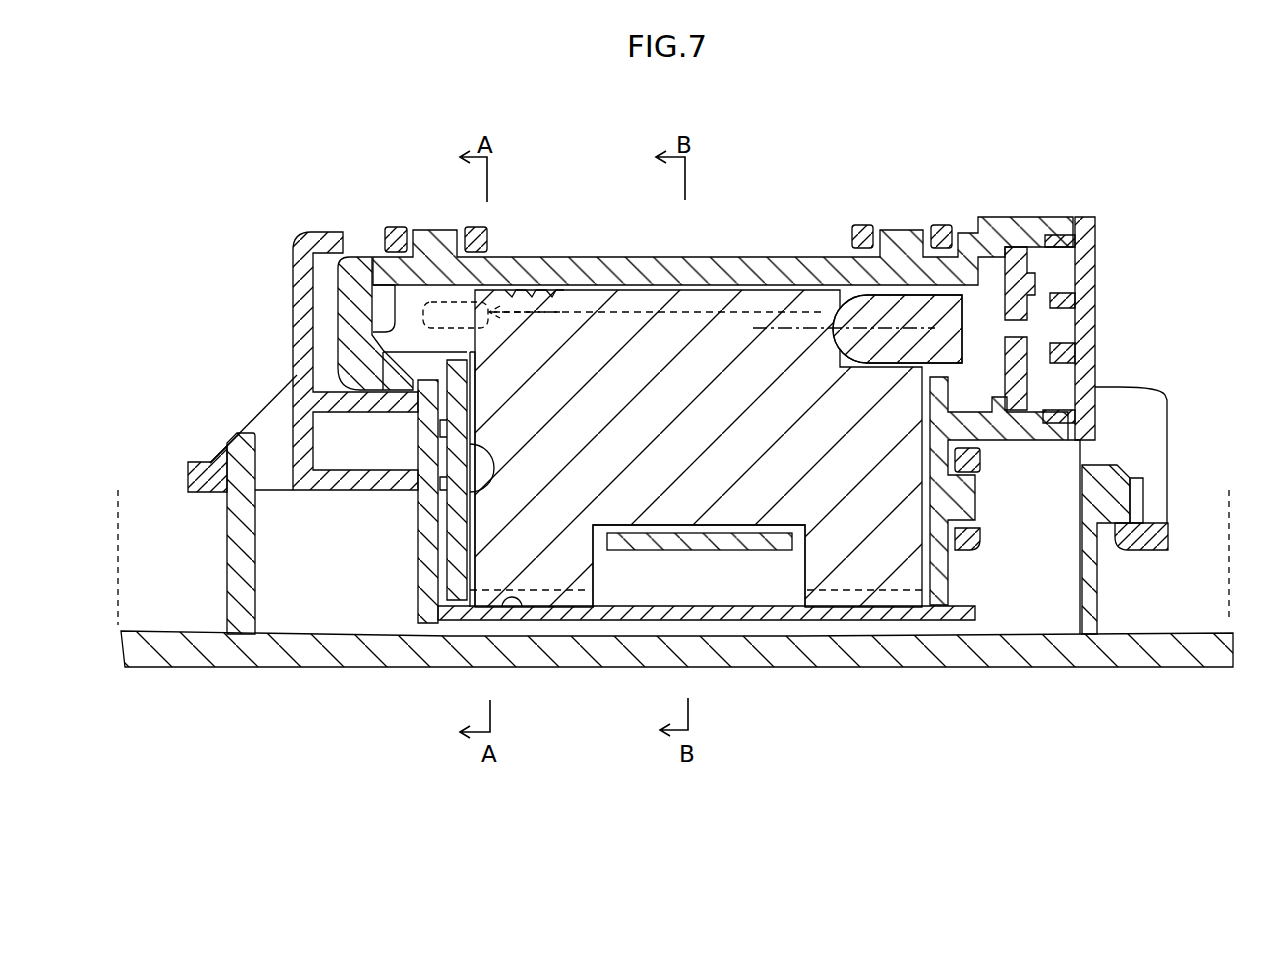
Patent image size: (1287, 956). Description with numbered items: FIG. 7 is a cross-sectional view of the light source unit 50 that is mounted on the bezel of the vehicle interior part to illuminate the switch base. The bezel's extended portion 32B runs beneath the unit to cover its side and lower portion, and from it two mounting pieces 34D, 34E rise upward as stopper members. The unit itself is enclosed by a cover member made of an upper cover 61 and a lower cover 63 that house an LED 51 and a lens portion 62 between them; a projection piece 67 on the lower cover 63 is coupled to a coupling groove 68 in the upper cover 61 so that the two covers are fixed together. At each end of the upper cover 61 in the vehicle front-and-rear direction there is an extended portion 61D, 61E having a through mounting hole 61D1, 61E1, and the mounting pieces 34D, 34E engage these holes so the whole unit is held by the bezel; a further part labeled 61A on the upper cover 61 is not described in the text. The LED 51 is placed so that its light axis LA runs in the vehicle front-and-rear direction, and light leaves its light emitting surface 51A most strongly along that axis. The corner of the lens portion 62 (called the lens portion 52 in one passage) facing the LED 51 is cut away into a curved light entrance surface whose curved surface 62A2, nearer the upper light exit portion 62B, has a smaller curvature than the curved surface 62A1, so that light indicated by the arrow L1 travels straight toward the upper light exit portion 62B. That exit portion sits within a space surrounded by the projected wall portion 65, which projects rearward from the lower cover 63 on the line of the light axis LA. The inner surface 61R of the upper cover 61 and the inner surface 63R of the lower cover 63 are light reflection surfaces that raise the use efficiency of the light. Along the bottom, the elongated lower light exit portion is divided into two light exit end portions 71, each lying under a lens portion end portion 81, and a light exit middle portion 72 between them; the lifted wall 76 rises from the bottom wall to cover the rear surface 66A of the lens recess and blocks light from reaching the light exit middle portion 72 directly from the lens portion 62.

The extended portion 32B is at (278, 653).
The mounting piece 34D is at (228, 533).
The mounting piece 34E is at (1093, 580).
The light source unit 50 is at (1130, 240).
The LED 51 is at (948, 315).
The light emitting surface 51A is at (838, 312).
The lens portion 52 is at (1023, 247).
The upper cover 61 is at (305, 298).
The engaging portion 61A is at (457, 313).
The extended portion 61D is at (202, 462).
The mounting hole 61D1 is at (232, 478).
The extended portion 61E is at (1152, 527).
The mounting hole 61E1 is at (1133, 520).
The inner surface of the upper cover 61R is at (500, 600).
The lens portion 62 is at (710, 297).
The curved surface 62A1 is at (935, 330).
The curved surface 62A2 is at (852, 340).
The upper light exit portion 62B is at (412, 307).
The lower cover 63 is at (550, 272).
The inner surface of the lower cover 63R is at (422, 560).
The projected wall portion 65 is at (377, 337).
The rear surface of the recess 66A is at (783, 550).
The projection piece 67 is at (967, 548).
The coupling groove 68 is at (980, 478).
The light exit end portion 71 is at (558, 592).
The light exit middle portion 72 is at (640, 590).
The lifted wall 76 is at (743, 550).
The lens portion end portion 81 is at (483, 597).
The arrow representing light exited from the LED L1 is at (640, 312).
The light axis LA is at (860, 325).